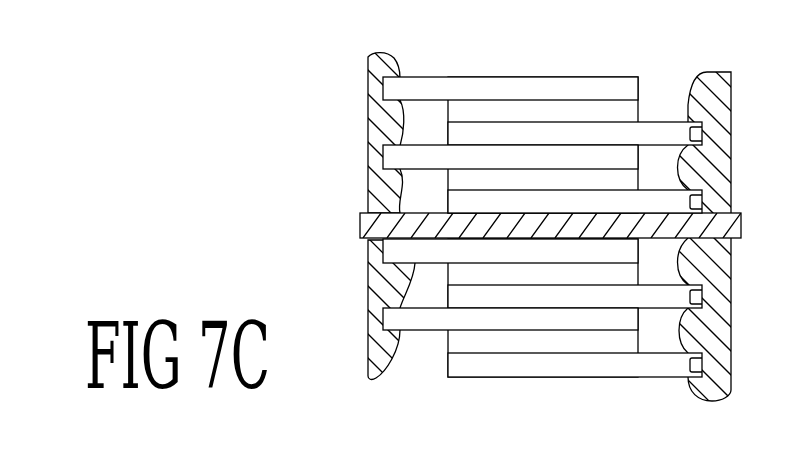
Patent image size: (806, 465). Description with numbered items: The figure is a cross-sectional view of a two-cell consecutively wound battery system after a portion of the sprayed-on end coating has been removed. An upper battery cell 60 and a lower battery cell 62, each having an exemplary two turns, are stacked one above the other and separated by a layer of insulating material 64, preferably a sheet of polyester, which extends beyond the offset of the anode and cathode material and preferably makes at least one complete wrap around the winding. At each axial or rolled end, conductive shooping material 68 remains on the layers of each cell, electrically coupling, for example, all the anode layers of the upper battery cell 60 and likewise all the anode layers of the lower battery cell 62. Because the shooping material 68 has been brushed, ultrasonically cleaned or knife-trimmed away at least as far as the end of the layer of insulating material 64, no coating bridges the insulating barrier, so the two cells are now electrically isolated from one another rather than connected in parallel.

The upper battery cell 60 is at (343, 78).
The lower battery cell 62 is at (343, 378).
The layer of insulating material 64 is at (738, 225).
The conductive shooping material 68 is at (384, 60).